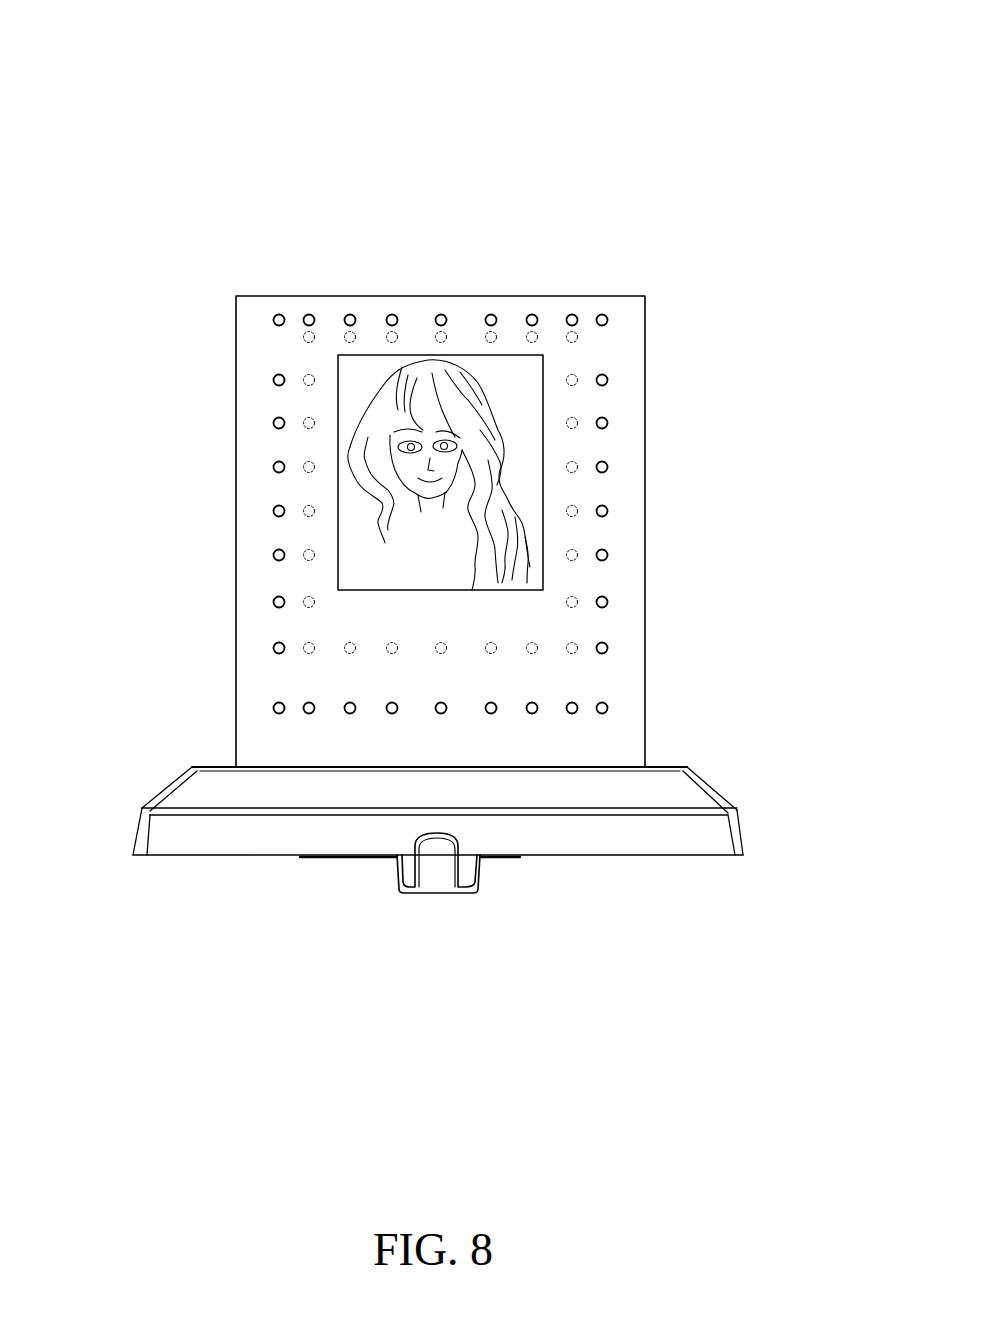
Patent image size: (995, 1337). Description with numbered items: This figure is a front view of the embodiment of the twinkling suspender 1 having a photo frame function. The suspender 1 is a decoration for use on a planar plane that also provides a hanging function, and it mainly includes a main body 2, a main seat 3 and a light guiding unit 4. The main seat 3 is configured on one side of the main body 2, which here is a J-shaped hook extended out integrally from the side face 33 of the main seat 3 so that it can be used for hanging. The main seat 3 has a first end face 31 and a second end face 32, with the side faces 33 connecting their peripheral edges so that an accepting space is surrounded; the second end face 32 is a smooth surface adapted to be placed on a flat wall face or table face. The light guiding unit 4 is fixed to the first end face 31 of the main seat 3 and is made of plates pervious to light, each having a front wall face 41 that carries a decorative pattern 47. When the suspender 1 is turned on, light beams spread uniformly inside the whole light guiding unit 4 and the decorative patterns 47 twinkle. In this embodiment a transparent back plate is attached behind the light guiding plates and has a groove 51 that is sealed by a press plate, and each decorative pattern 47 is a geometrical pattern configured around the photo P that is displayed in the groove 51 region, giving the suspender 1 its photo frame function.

The twinkling suspender 1 is at (150, 70).
The main body 2 is at (436, 883).
The main seat 3 is at (711, 787).
The first end face 31 is at (209, 766).
The second end face 32 is at (735, 858).
The side face 33 is at (294, 836).
The light guiding unit 4 is at (225, 388).
The front wall face 41 is at (237, 540).
The decorative pattern 47 is at (577, 599).
The groove 51 is at (544, 508).
The photo P is at (544, 437).